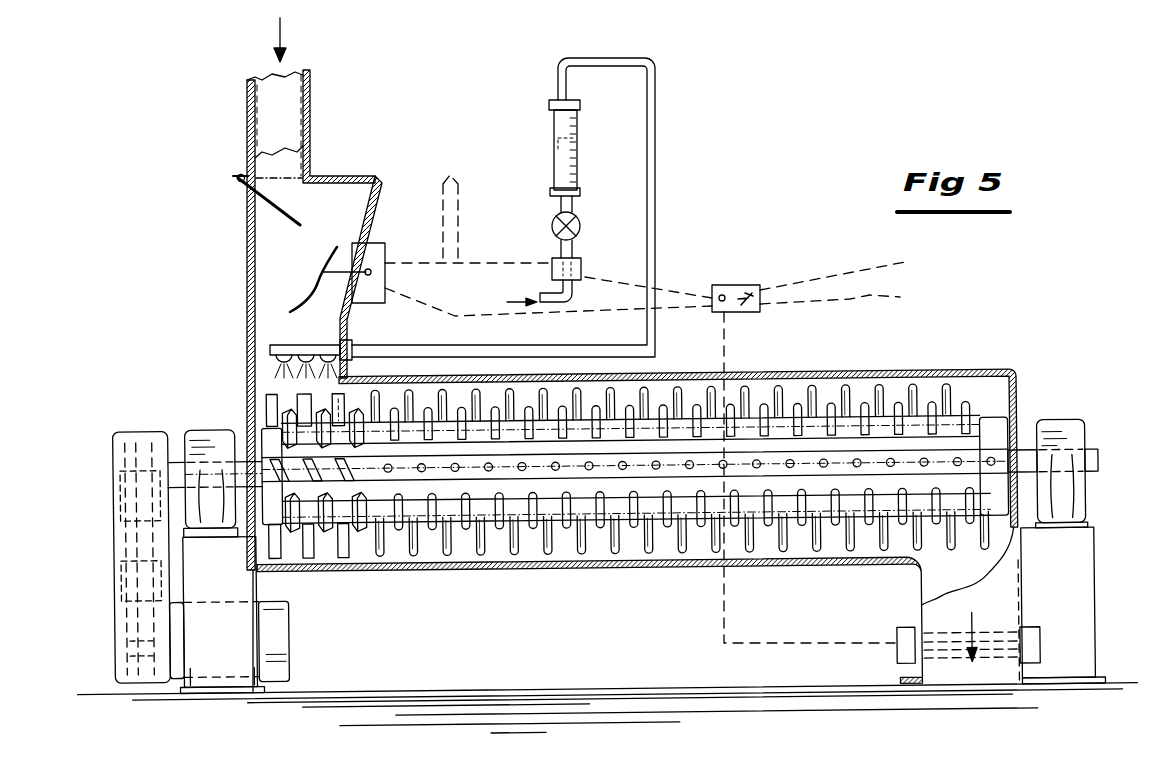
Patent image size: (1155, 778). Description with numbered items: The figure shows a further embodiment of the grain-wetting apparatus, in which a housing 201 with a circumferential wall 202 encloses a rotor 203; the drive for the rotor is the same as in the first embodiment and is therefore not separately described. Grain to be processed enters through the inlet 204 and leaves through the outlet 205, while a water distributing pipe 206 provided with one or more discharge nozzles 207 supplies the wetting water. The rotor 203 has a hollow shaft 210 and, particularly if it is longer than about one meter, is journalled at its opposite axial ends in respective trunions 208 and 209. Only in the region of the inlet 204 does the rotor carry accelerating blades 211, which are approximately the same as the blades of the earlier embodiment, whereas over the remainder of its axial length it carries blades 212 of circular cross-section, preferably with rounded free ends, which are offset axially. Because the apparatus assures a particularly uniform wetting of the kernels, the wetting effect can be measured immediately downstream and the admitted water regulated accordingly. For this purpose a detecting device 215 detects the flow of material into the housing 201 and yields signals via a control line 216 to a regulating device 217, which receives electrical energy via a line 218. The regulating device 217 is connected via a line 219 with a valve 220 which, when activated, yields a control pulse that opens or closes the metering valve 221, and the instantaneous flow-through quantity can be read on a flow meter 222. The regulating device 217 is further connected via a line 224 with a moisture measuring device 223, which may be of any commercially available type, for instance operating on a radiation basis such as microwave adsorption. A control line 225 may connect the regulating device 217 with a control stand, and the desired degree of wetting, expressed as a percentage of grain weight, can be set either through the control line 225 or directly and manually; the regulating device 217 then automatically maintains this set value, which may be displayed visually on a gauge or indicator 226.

The housing 201 is at (262, 352).
The circumferential wall 202 is at (735, 378).
The rotor 203 is at (815, 452).
The inlet 204 is at (282, 327).
The outlet 205 is at (948, 585).
The water distributing pipe 206 is at (656, 268).
The discharge nozzles 207 is at (297, 360).
The trunion 208 is at (1017, 453).
The trunion 209 is at (180, 470).
The hollow shaft 210 is at (395, 545).
The accelerating blades 211 is at (308, 548).
The blades 212 is at (577, 548).
The detecting device 215 is at (370, 253).
The control line 216 is at (458, 316).
The regulating device 217 is at (738, 292).
The line 218 is at (450, 180).
The line 219 is at (622, 280).
The valve 220 is at (560, 270).
The metering valve 221 is at (556, 222).
The flow meter 222 is at (558, 123).
The moisture measuring device 223 is at (900, 657).
The line 224 is at (726, 598).
The control line 225 is at (903, 262).
The gauge or indicator 226 is at (758, 292).